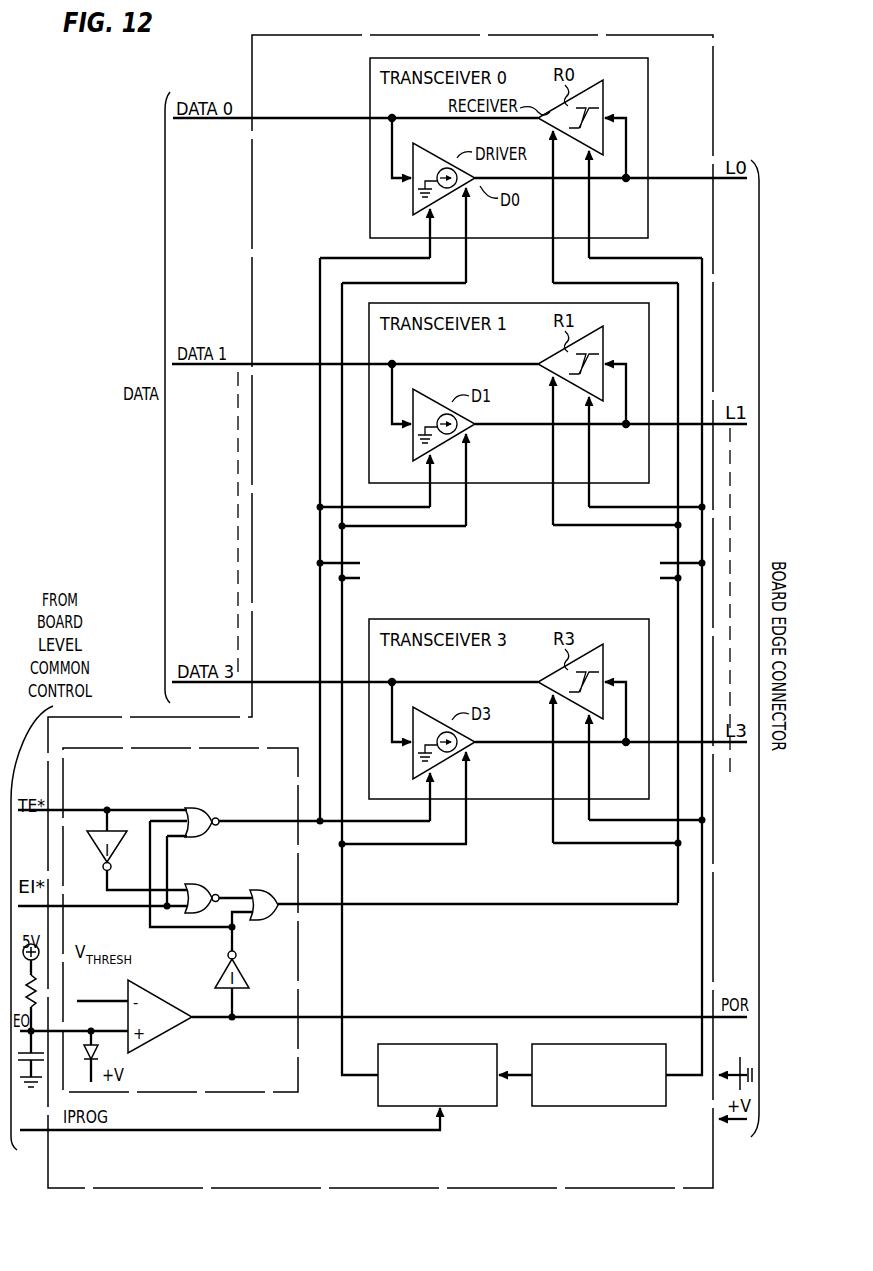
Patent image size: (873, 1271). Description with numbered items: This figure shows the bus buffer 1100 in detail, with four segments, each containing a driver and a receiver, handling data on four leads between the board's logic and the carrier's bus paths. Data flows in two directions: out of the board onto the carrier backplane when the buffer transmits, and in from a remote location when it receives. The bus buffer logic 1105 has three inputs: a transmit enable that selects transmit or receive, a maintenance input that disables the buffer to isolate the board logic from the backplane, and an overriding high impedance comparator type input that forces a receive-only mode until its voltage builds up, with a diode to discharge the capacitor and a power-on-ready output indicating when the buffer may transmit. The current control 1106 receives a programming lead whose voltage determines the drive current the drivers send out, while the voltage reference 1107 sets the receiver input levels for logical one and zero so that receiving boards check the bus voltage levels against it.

The bus buffer 1100 is at (346, 35).
The bus buffer logic 1105 is at (202, 748).
The current control 1106 is at (450, 1106).
The voltage reference 1107 is at (575, 1106).